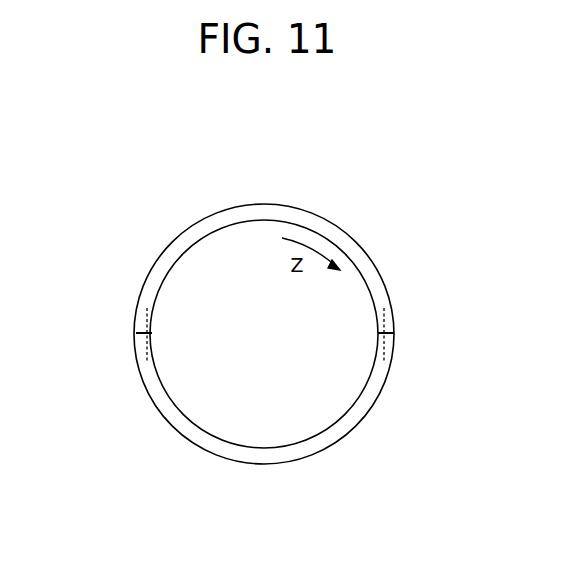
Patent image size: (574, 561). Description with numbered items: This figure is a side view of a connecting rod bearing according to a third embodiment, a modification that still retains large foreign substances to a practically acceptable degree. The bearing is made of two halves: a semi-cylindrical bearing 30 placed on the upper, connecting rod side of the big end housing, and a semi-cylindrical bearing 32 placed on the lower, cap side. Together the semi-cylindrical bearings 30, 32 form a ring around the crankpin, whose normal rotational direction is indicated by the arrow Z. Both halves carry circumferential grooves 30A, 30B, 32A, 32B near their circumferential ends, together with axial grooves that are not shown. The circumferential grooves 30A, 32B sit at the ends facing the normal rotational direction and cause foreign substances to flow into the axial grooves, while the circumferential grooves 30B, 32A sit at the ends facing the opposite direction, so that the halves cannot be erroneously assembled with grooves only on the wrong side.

The semi-cylindrical bearing 30 is at (289, 205).
The semi-cylindrical bearing 32 is at (283, 458).
The circumferential groove 30A is at (393, 316).
The circumferential groove 30B is at (142, 318).
The circumferential groove 32A is at (394, 353).
The circumferential groove 32B is at (141, 352).